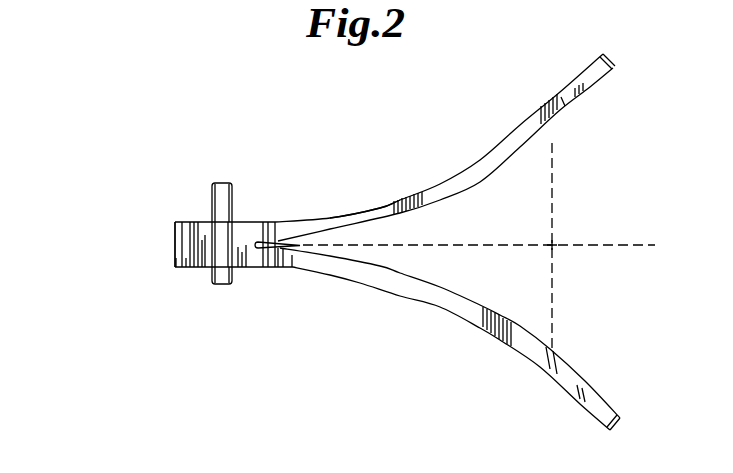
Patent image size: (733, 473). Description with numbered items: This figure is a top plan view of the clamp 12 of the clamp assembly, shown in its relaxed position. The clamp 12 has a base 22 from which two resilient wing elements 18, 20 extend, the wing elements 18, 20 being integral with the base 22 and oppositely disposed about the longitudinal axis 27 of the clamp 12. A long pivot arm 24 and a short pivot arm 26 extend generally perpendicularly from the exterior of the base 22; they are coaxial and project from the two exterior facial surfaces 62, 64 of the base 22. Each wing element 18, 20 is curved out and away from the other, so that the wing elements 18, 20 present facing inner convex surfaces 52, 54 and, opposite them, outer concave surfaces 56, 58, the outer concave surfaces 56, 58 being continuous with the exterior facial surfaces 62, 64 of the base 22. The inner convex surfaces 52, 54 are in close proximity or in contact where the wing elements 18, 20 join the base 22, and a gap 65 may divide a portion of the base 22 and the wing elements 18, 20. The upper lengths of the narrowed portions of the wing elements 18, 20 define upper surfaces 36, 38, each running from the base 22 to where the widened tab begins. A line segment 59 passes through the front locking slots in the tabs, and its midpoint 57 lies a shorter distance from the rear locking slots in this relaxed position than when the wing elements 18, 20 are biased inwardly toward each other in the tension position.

The clamp 12 is at (315, 299).
The wing element 18 is at (485, 150).
The wing element 20 is at (493, 351).
The base 22 is at (175, 245).
The long pivot arm 24 is at (233, 183).
The short pivot arm 26 is at (233, 275).
The longitudinal axis 27 is at (636, 246).
The upper surface 36 is at (362, 216).
The upper surface 38 is at (402, 277).
The inner convex surface 52 is at (484, 182).
The inner convex surface 54 is at (474, 302).
The outer concave surface 56 is at (441, 181).
The midpoint 57 is at (558, 243).
The outer concave surface 58 is at (450, 311).
The line segment 59 is at (556, 301).
The exterior facial surface 62 is at (188, 222).
The exterior facial surface 64 is at (182, 266).
The gap 65 is at (276, 243).